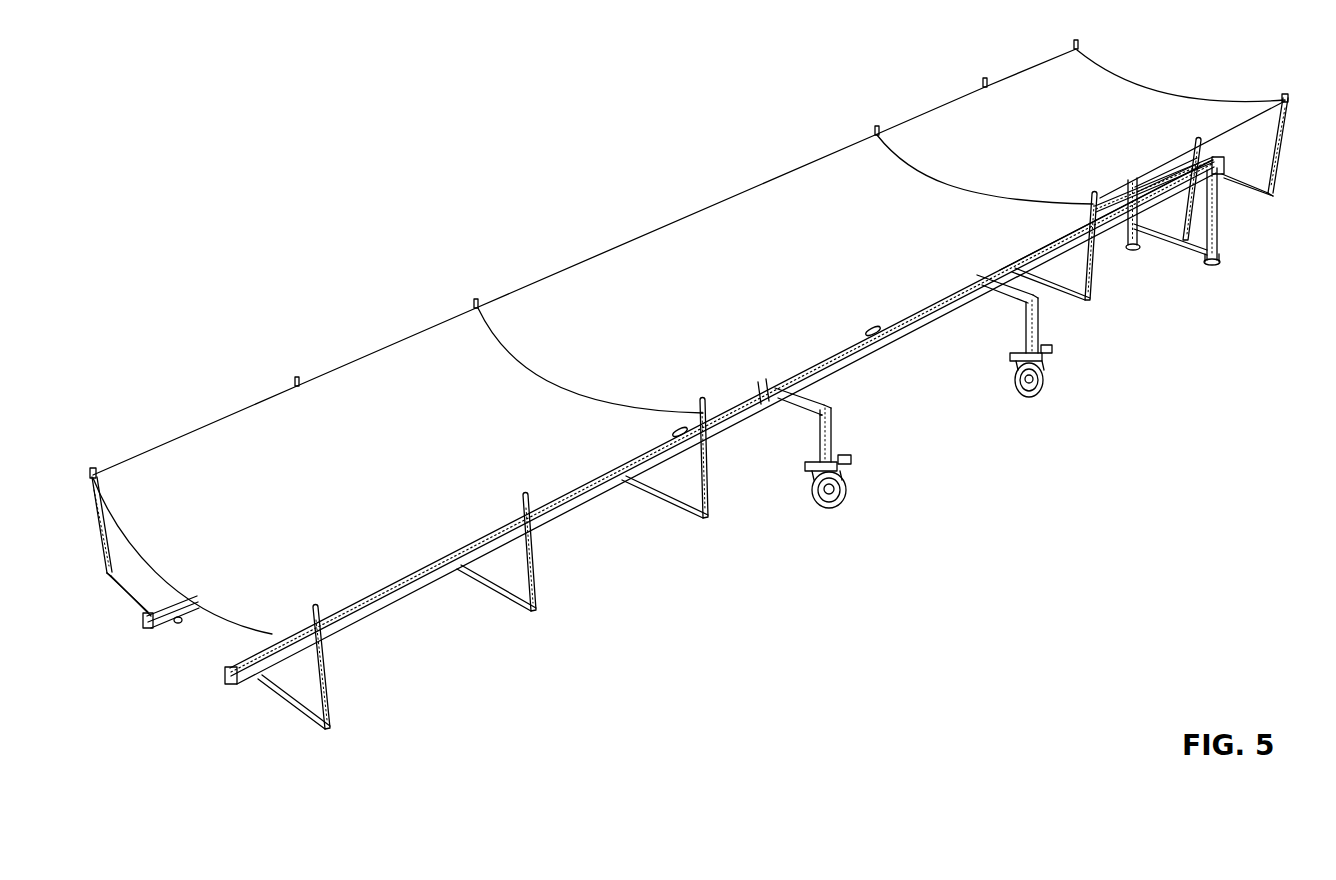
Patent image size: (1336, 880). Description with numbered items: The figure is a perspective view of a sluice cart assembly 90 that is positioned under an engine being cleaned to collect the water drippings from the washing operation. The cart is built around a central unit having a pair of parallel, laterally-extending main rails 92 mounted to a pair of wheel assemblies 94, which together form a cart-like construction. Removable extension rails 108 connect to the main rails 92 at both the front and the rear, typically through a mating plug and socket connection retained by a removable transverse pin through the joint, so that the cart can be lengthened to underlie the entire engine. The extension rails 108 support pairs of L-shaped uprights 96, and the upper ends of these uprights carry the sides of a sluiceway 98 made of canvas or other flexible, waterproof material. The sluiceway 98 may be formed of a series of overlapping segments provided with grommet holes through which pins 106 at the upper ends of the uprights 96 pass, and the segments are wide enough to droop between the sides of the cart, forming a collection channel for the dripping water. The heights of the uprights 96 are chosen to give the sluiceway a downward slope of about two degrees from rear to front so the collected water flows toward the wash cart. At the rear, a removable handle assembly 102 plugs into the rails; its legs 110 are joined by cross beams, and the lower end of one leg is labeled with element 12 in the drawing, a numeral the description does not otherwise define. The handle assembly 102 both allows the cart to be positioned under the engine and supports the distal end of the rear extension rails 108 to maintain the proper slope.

The leg foot 12 is at (1194, 248).
The sluice cart assembly 90 is at (277, 261).
The main rails 92 is at (150, 628).
The wheel assemblies 94 is at (1022, 328).
The L-shaped uprights 96 is at (535, 558).
The sluiceway 98 is at (780, 270).
The handle assembly 102 is at (1237, 266).
The pins 106 is at (478, 298).
The extension rails 108 is at (1107, 228).
The legs 110 is at (1222, 207).